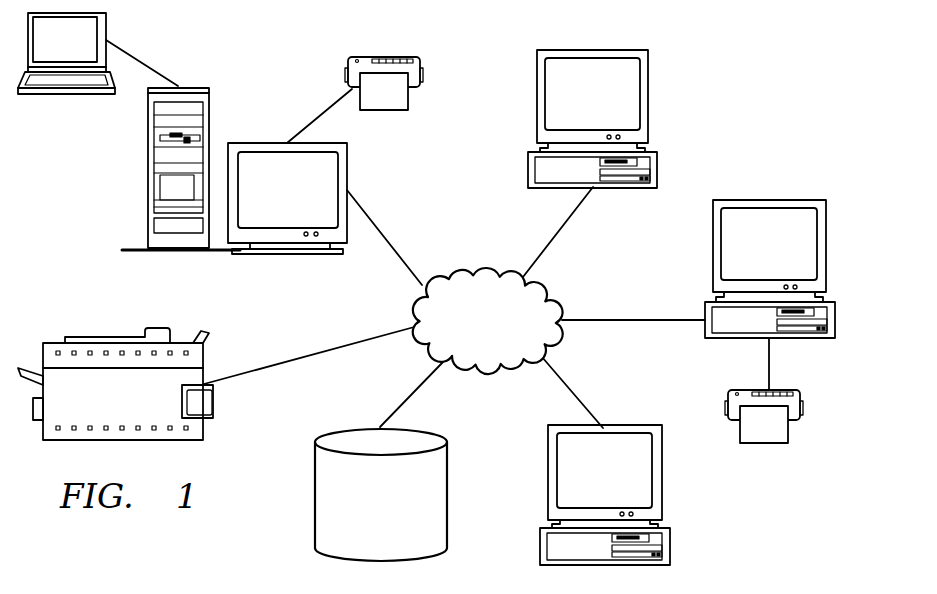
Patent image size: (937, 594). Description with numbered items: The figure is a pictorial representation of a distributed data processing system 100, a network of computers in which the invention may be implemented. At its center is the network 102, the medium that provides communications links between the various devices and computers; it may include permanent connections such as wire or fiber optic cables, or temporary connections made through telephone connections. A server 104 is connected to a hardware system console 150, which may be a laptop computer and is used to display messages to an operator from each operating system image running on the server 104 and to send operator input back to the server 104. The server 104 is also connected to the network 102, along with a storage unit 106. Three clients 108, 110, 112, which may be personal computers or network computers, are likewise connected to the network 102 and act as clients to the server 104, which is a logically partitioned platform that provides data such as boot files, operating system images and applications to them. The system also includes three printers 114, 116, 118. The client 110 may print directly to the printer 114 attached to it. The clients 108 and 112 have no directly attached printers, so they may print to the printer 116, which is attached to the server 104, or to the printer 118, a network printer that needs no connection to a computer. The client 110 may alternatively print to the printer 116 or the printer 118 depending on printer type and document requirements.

The distributed data processing system 100 is at (760, 114).
The network 102 is at (469, 332).
The server 104 is at (270, 199).
The storage unit 106 is at (363, 511).
The client 108 is at (576, 108).
The client 110 is at (752, 255).
The client 112 is at (588, 483).
The printer 114 is at (805, 409).
The printer 116 is at (423, 76).
The printer 118 is at (100, 406).
The hardware system console 150 is at (47, 53).